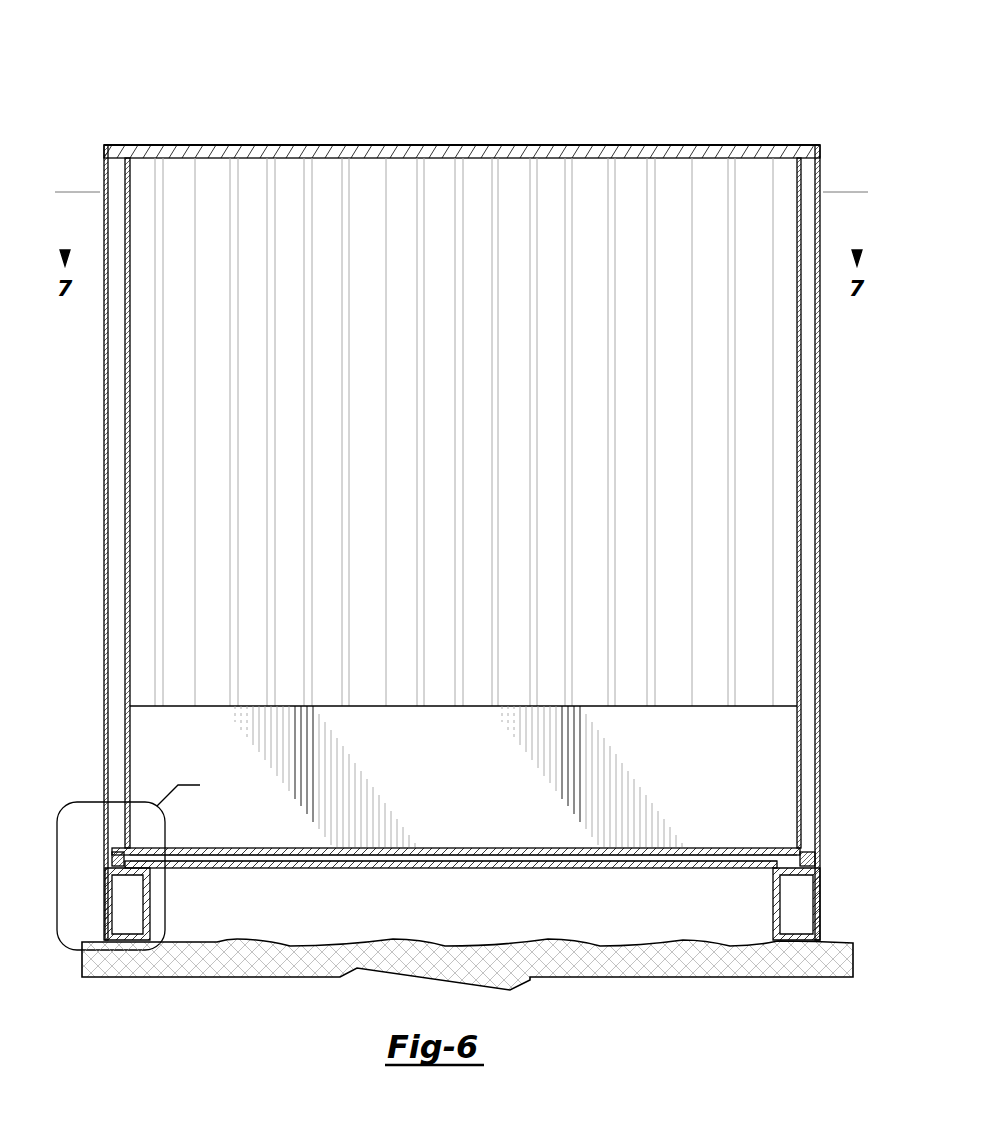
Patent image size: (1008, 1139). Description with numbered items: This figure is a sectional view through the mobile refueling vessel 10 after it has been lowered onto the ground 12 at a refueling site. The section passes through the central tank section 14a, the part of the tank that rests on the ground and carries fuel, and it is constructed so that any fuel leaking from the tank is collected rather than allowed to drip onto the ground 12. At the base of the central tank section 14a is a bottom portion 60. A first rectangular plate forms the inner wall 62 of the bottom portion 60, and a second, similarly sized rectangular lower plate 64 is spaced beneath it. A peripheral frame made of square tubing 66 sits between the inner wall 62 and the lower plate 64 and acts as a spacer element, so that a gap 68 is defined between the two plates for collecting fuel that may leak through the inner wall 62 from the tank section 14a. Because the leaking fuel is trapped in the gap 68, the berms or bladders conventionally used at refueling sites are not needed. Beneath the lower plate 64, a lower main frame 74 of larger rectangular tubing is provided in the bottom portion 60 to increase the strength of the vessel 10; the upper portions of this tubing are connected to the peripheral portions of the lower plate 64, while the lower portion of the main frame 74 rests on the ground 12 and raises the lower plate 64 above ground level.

The mobile refueling vessel 10 is at (610, 106).
The central tank section 14a is at (437, 175).
The bottom portion 60 is at (92, 820).
The inner wall 62 is at (467, 848).
The lower plate 64 is at (497, 868).
The square tubing 66 is at (113, 860).
The gap 68 is at (622, 857).
The lower main frame 74 is at (822, 893).
The ground 12 is at (630, 943).